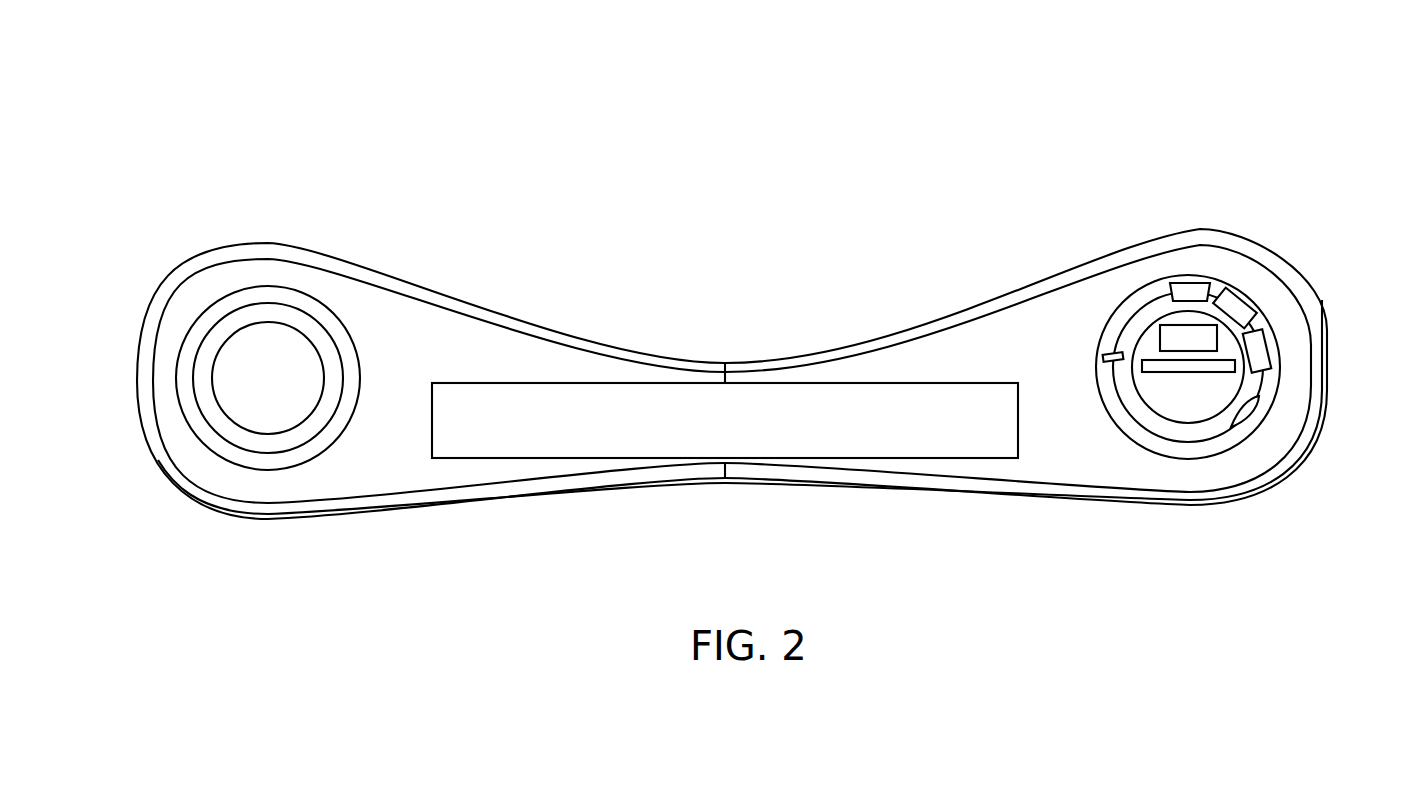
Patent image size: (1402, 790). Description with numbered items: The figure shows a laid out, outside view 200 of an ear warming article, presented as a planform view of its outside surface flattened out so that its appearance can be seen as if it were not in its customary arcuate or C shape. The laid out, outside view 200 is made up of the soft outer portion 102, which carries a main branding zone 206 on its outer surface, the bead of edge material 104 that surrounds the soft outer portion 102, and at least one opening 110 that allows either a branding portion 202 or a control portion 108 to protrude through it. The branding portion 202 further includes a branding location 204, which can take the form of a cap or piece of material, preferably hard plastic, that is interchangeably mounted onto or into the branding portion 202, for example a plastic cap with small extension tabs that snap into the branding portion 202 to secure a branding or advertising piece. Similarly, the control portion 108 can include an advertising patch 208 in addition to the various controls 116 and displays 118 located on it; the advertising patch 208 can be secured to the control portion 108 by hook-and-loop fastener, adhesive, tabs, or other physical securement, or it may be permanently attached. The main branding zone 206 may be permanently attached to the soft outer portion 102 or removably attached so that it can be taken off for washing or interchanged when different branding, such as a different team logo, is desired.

The laid out, outside view 200 is at (590, 94).
The soft outer portion 102 is at (567, 365).
The bead of edge material 104 is at (186, 259).
The opening 110 is at (265, 286).
The branding portion 202 is at (265, 440).
The branding location 204 is at (236, 412).
The main branding zone 206 is at (480, 450).
The control portion 108 is at (1200, 410).
The controls 116 is at (1180, 283).
The displays 118 is at (1163, 337).
The advertising patch 208 is at (1188, 371).